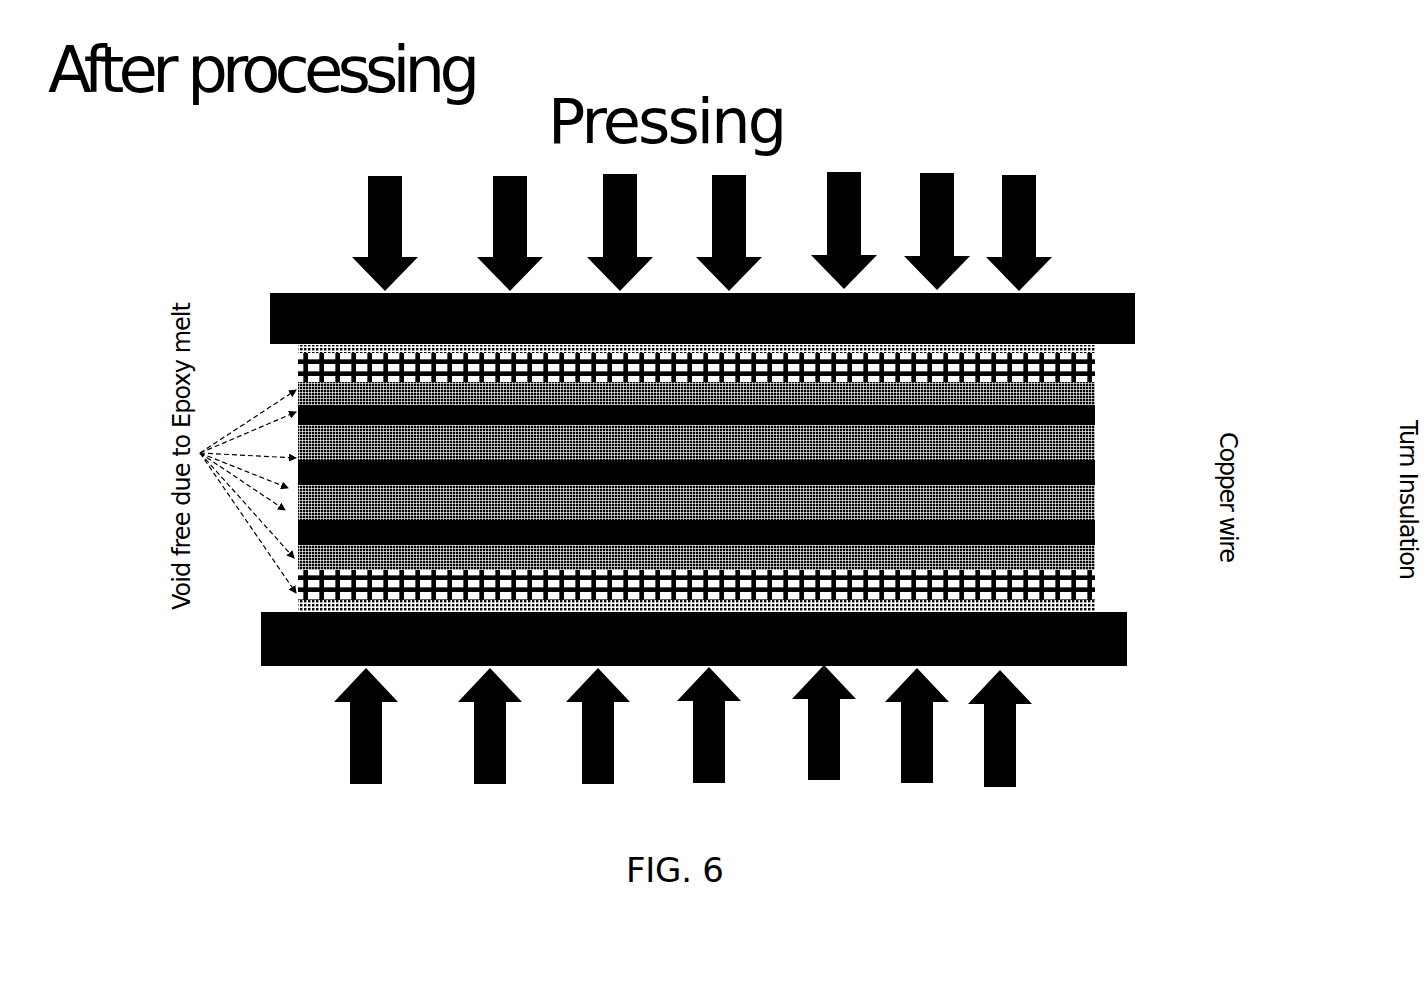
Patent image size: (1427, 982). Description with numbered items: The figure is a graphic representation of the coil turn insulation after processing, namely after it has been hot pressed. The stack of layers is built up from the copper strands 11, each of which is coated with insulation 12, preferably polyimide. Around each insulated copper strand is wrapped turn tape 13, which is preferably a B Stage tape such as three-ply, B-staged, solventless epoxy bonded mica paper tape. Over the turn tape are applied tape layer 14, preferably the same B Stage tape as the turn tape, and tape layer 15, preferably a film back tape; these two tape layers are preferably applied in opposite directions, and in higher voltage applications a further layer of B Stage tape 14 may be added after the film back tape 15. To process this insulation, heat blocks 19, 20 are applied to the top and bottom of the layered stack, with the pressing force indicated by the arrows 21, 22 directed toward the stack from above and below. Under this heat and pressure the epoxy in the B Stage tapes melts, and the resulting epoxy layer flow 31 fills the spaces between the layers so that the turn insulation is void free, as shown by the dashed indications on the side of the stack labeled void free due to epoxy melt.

The copper strands/wire 11 is at (1095, 477).
The insulation 12 is at (1095, 463).
The turn tape 13 is at (1095, 507).
The tape layer 14 is at (1092, 567).
The tape layer 15 is at (1095, 587).
The heat block 19 is at (702, 319).
The heat block 20 is at (694, 639).
The arrow 21 is at (702, 187).
The arrow 22 is at (699, 726).
The epoxy layer flow 31 is at (1095, 435).